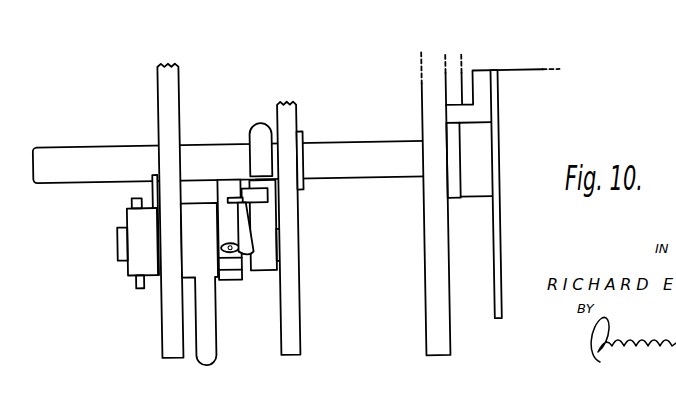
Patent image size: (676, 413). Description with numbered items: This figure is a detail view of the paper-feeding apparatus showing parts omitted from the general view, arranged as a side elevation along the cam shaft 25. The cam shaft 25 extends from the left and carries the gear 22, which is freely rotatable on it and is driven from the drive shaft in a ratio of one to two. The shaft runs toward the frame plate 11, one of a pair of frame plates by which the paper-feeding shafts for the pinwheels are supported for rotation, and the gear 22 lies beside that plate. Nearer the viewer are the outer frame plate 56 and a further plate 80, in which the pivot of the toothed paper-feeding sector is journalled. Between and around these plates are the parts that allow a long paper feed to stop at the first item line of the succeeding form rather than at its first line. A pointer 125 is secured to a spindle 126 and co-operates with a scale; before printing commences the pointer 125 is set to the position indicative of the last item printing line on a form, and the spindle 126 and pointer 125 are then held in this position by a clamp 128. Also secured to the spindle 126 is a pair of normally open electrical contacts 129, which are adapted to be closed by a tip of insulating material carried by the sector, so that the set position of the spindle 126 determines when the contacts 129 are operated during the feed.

The frame plate 11 is at (434, 324).
The gear 22 is at (499, 261).
The cam shaft 25 is at (400, 175).
The outer frame plate 56 is at (165, 332).
The further plate 80 is at (298, 330).
The pointer 125 is at (148, 194).
The spindle 126 is at (121, 243).
The clamp 128 is at (206, 339).
The pair of normally open electrical contacts 129 is at (254, 123).